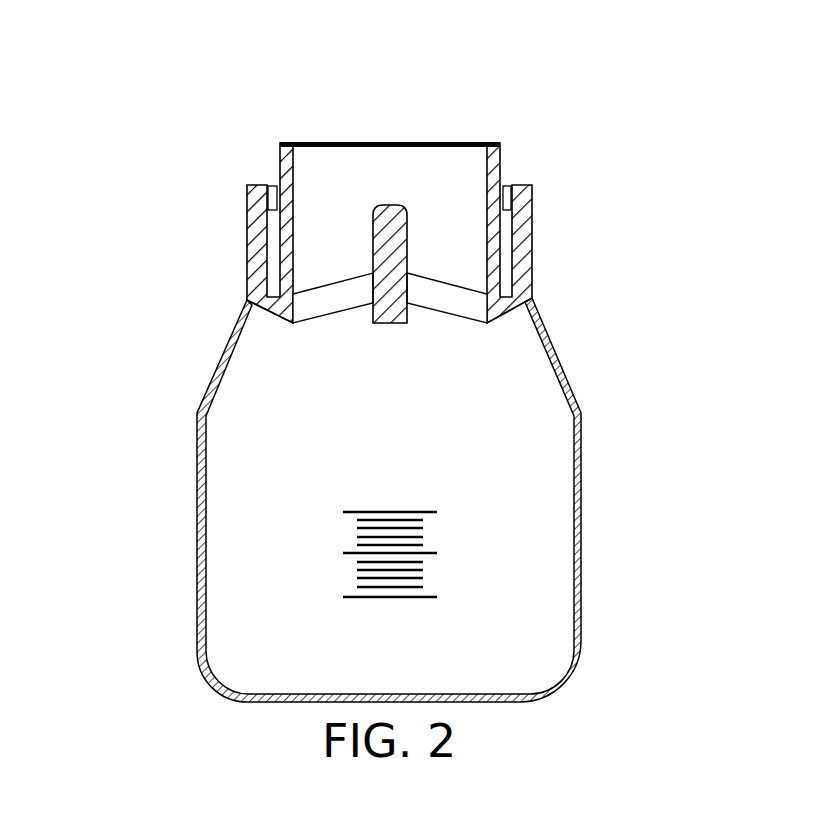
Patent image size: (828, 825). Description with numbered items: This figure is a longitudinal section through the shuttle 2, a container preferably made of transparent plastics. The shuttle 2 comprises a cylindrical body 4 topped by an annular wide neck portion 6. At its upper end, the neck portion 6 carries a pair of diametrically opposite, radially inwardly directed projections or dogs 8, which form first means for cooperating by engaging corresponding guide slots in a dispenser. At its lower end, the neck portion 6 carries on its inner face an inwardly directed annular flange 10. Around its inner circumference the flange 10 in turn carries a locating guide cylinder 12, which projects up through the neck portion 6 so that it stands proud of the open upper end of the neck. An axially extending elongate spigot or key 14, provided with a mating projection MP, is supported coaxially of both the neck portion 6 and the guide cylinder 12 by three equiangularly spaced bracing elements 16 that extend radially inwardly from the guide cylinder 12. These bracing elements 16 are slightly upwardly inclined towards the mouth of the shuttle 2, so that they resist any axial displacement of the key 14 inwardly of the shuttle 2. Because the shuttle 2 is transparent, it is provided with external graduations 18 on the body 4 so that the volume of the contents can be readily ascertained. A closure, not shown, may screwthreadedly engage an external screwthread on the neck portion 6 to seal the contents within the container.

The shuttle 2 is at (373, 382).
The cylindrical body 4 is at (583, 610).
The neck portion 6 is at (420, 220).
The projections or dogs 8 is at (514, 188).
The annular flange 10 is at (496, 323).
The locating guide cylinder 12 is at (426, 147).
The spigot or key 14 is at (389, 204).
The bracing elements 16 is at (438, 305).
The external graduations 18 is at (337, 570).
The mating projection MP is at (400, 207).